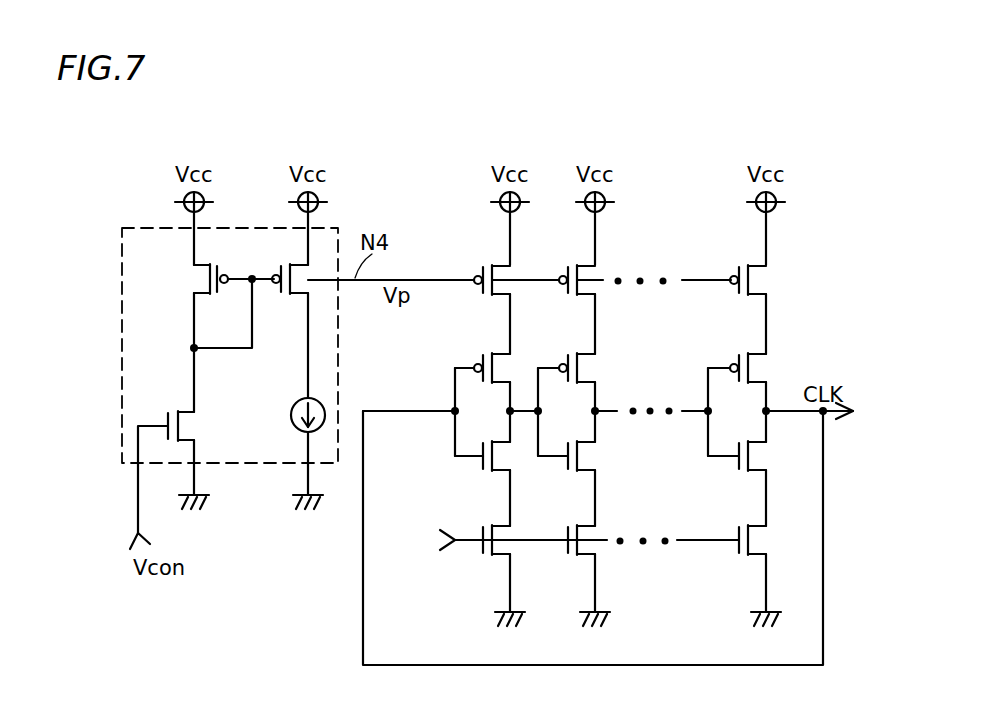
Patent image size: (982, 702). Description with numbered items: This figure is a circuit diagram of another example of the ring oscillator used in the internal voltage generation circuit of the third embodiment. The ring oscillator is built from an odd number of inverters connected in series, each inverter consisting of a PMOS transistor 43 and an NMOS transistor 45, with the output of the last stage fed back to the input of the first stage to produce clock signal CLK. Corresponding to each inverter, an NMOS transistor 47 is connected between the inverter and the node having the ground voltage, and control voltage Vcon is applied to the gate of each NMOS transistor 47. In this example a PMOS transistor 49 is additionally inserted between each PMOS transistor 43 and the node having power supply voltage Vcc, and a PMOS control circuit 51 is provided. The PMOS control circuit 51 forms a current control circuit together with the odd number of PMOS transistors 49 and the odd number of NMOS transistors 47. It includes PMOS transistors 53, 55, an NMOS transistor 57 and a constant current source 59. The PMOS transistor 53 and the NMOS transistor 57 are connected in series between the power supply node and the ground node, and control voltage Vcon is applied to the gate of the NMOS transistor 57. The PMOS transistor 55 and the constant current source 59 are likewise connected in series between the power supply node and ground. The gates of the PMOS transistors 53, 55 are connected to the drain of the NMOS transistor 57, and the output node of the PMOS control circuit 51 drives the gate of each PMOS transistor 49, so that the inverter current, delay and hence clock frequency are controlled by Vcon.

The PMOS transistor 43 is at (478, 357).
The NMOS transistor 45 is at (473, 461).
The NMOS transistor 47 is at (485, 560).
The PMOS transistor 49 is at (488, 262).
The PMOS control circuit 51 is at (340, 223).
The PMOS transistor 53 is at (212, 280).
The PMOS transistor 55 is at (286, 300).
The NMOS transistor 57 is at (185, 424).
The constant current source 59 is at (294, 408).